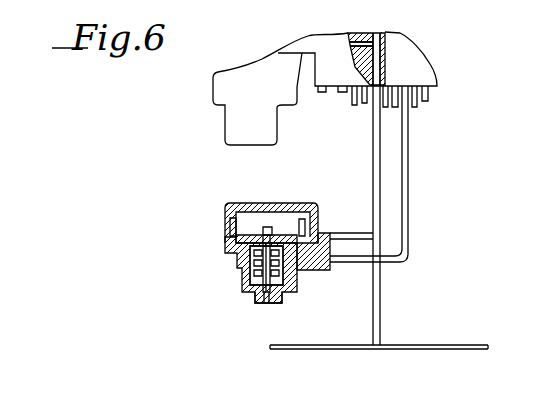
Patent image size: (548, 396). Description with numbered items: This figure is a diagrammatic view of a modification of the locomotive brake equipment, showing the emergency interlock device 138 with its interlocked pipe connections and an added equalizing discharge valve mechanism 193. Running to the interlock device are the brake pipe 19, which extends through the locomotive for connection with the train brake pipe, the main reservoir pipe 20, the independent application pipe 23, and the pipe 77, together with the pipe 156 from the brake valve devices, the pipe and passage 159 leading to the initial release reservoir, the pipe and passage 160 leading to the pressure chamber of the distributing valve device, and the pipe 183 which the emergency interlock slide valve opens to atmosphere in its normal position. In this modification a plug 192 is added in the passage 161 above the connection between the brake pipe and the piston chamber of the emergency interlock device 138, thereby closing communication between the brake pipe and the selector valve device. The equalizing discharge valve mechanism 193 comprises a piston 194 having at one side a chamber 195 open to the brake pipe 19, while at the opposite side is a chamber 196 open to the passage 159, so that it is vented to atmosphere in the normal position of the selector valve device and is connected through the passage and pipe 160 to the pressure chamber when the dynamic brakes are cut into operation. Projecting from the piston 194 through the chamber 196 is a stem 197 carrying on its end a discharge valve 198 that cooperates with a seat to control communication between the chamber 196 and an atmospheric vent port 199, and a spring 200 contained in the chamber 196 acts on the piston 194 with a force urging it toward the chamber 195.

The brake pipe 19 is at (373, 180).
The main reservoir pipe 20 is at (430, 97).
The independent application pipe 23 is at (364, 105).
The contact pin 77 is at (352, 101).
The emergency interlock device 138 is at (206, 98).
The pipe 156 is at (417, 105).
The pipe and passage 159 is at (408, 195).
The pipe and passage 160 is at (380, 110).
The passage 161 is at (382, 55).
The pipe 183 is at (394, 108).
The plug 192 is at (380, 32).
The equalizing discharge valve mechanism 193 is at (218, 241).
The piston 194 is at (228, 223).
The chamber 195 is at (245, 221).
The chamber 196 is at (226, 253).
The stem 197 is at (243, 268).
The discharge valve 198 is at (262, 278).
The atmospheric vent port 199 is at (268, 304).
The spring 200 is at (298, 268).